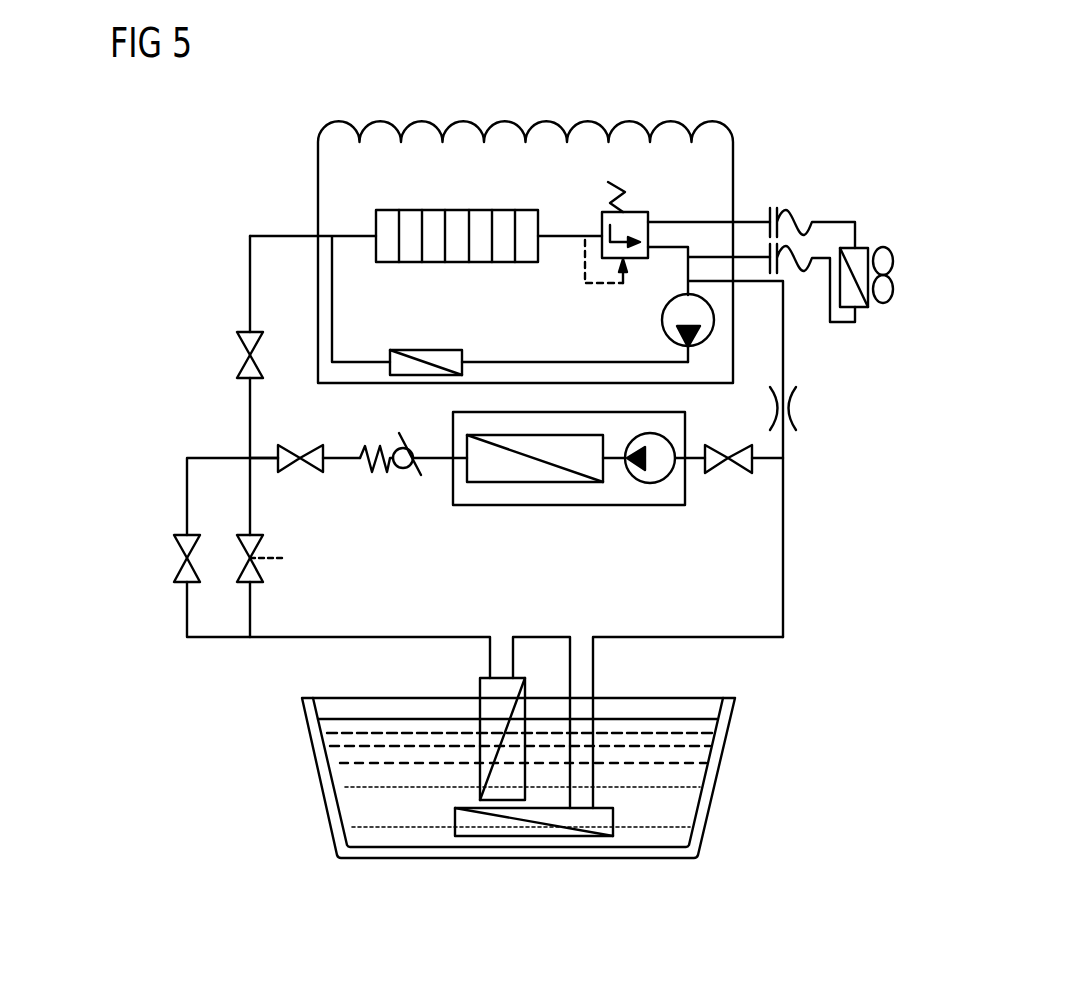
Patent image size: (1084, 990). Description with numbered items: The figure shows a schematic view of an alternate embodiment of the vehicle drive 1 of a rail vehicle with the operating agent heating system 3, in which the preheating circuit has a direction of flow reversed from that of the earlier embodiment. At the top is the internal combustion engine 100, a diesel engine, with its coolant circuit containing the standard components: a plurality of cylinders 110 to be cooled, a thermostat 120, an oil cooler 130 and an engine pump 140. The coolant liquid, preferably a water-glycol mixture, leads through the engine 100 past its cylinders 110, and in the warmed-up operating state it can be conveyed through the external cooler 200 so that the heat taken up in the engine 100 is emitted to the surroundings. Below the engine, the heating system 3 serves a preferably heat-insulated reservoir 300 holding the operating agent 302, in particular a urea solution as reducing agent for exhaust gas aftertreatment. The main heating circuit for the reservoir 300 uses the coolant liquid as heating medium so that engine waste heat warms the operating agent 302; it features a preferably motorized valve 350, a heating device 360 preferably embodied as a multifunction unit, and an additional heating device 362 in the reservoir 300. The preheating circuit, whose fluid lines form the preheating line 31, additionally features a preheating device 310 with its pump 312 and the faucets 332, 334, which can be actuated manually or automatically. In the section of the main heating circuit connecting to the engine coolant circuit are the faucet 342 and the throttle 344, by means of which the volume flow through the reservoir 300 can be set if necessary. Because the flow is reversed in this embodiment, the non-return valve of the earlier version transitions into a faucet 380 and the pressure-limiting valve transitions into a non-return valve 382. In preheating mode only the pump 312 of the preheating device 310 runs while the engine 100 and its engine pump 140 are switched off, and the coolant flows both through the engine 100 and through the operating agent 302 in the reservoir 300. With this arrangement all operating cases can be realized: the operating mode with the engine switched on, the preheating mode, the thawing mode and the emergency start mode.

The vehicle drive 1 is at (788, 91).
The internal combustion engine 100 is at (735, 142).
The cylinders 110 is at (418, 210).
The thermostat 120 is at (633, 212).
The oil cooler 130 is at (425, 350).
The engine pump 140 is at (662, 322).
The external cooler 200 is at (858, 247).
The operating agent heating system 3 is at (162, 480).
The preheating line 31 is at (258, 458).
The reservoir 300 is at (313, 760).
The operating agent 302 is at (368, 727).
The preheating device 310 is at (575, 505).
The pump 312 is at (650, 483).
The faucet 332 is at (300, 473).
The faucet 334 is at (726, 465).
The faucet 342 is at (237, 347).
The throttle 344 is at (795, 407).
The valve 350 is at (262, 571).
The heating device 360 is at (479, 702).
The additional heating device 362 is at (517, 838).
The faucet 380 is at (174, 550).
The non-return valve 382 is at (405, 470).